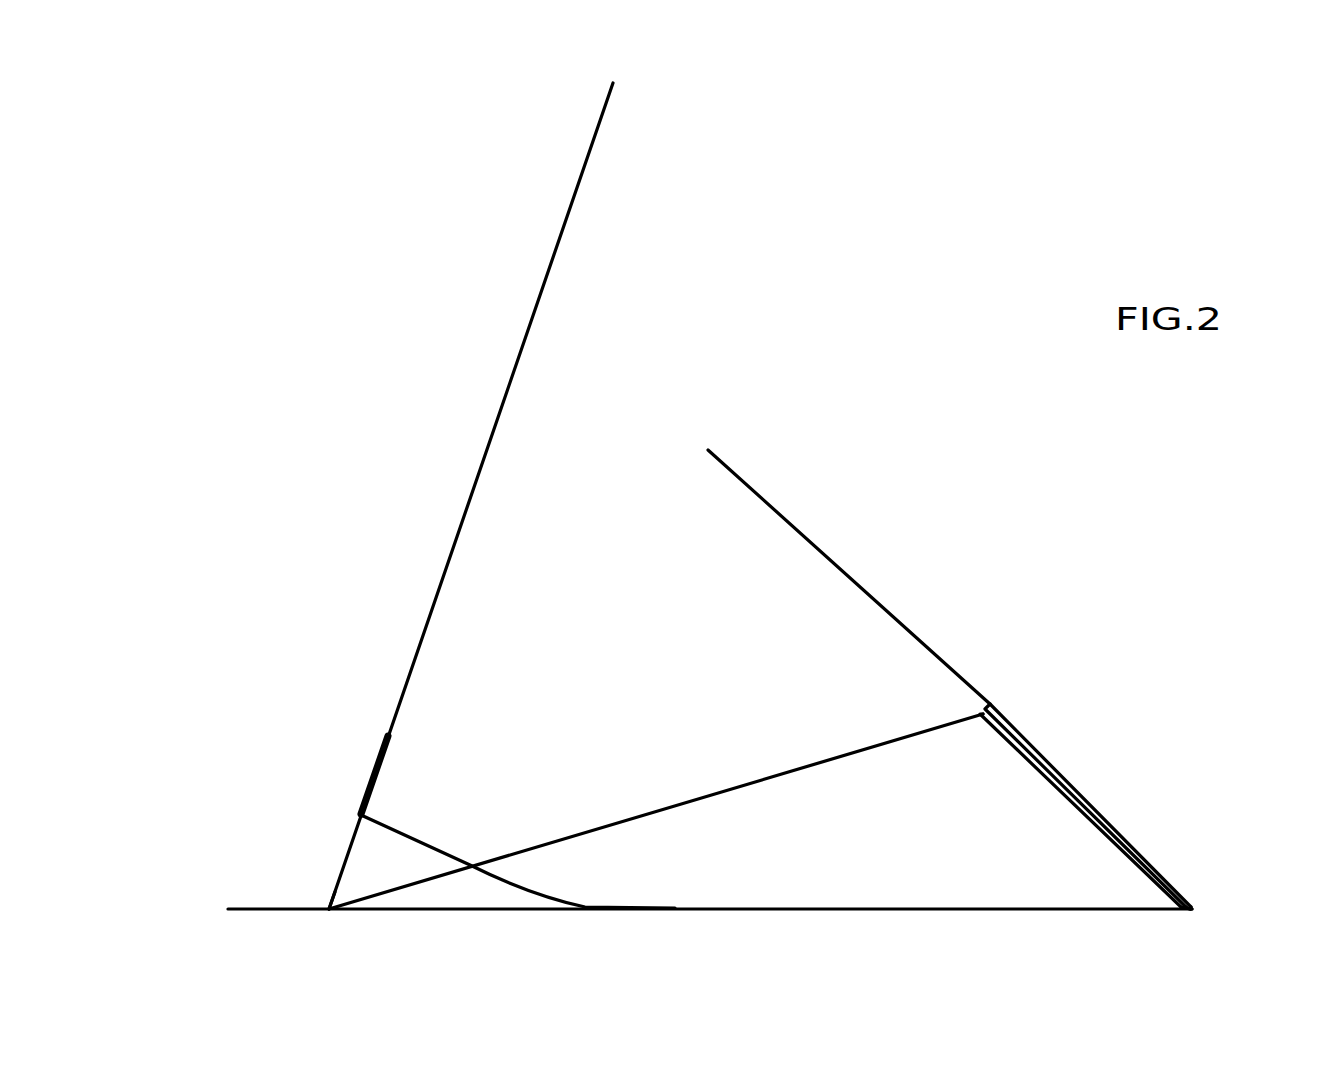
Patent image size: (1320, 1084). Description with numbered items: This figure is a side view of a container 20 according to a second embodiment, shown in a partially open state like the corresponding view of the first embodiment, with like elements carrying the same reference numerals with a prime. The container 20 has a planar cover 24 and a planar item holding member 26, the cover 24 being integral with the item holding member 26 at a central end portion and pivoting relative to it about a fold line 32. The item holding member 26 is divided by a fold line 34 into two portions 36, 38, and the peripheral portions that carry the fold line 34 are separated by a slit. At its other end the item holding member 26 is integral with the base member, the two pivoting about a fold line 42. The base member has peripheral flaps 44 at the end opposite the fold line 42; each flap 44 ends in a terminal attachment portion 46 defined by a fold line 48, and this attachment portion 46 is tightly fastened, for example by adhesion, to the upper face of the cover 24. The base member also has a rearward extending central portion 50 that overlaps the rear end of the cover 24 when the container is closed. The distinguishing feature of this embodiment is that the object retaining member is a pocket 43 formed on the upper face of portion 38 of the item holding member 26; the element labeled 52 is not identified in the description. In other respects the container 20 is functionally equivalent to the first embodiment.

The container 20 is at (910, 416).
The cover 24 is at (489, 443).
The item holding member 26 is at (908, 688).
The fold line 32 is at (327, 906).
The fold line 34 is at (998, 708).
The portion of item holding member 36 is at (648, 809).
The portion of item holding member 38 is at (1068, 797).
The fold line 42 is at (1193, 908).
The pocket 43 is at (1063, 770).
The peripheral flap 44 is at (418, 842).
The terminal attachment portion 46 is at (372, 770).
The fold line 48 is at (365, 812).
The rearward extending central portion 50 is at (267, 912).
The brace member 52 is at (824, 553).